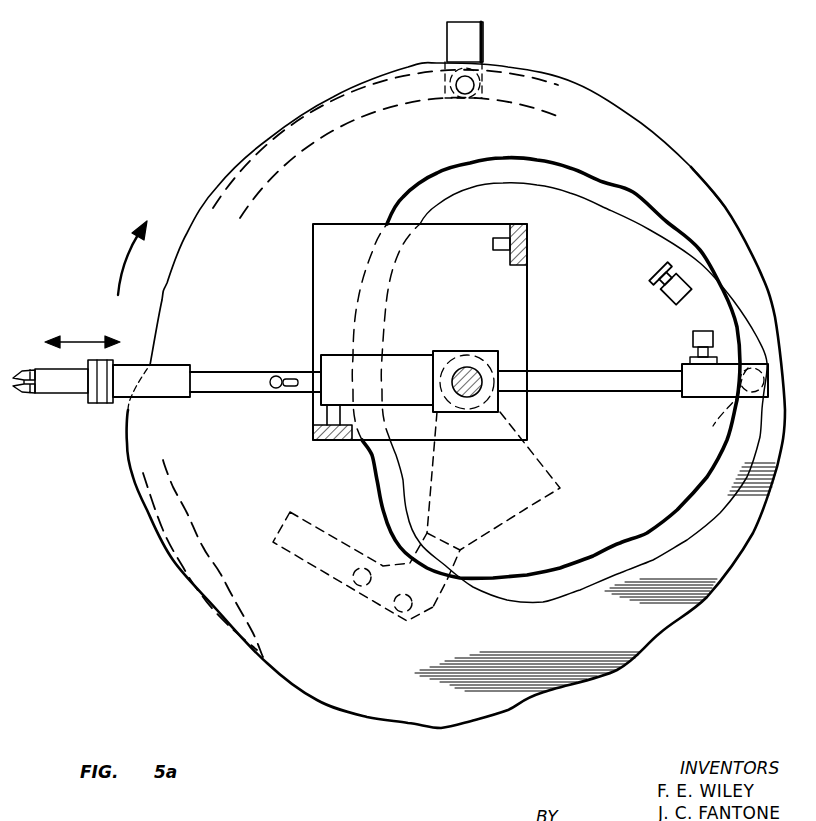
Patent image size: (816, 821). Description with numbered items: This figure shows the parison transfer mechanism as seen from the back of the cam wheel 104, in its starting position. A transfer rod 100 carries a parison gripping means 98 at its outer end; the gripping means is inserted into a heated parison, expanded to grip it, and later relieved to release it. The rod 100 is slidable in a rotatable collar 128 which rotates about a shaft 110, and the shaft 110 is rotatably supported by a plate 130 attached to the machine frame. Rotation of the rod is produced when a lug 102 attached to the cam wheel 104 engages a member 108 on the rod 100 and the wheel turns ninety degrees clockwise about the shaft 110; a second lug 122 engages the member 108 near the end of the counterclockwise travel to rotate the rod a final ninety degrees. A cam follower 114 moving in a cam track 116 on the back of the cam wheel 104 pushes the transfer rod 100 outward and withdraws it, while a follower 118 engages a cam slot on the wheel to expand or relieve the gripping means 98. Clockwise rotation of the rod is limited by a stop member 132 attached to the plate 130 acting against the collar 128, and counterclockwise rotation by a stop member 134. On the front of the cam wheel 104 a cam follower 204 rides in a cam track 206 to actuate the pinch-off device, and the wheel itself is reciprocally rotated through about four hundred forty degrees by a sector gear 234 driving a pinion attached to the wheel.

The parison gripping means 98 is at (27, 395).
The transfer rod 100 is at (220, 372).
The lug 102 is at (692, 339).
The cam wheel 104 is at (363, 655).
The member 108 is at (724, 391).
The shaft 110 is at (470, 374).
The cam follower 114 is at (726, 401).
The cam track 116 is at (566, 170).
The follower 118 is at (282, 392).
The lug 122 is at (655, 272).
The rotatable collar 128 is at (405, 355).
The plate 130 is at (333, 224).
The stop member 132 is at (520, 266).
The stop member 134 is at (313, 432).
The cam follower 204 is at (447, 30).
The cam track 206 is at (170, 487).
The sector gear 234 is at (528, 510).